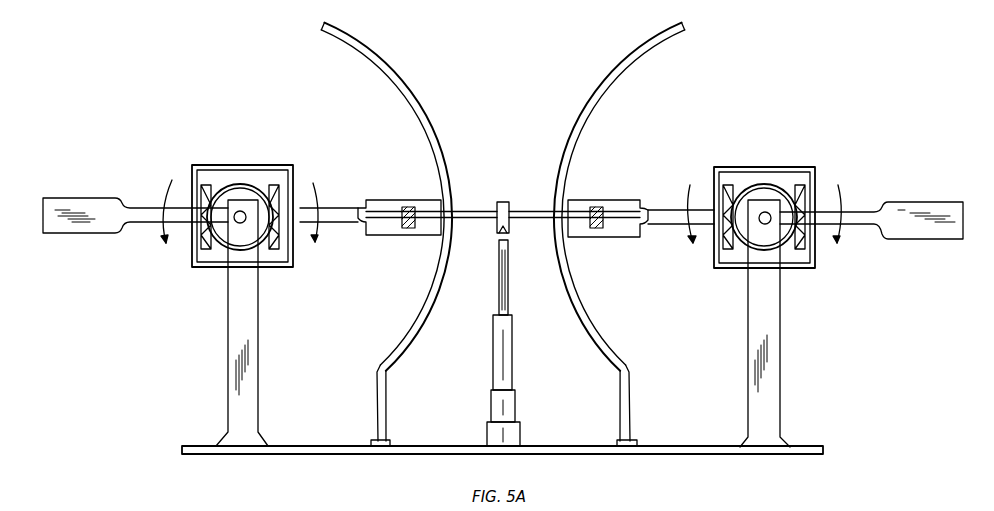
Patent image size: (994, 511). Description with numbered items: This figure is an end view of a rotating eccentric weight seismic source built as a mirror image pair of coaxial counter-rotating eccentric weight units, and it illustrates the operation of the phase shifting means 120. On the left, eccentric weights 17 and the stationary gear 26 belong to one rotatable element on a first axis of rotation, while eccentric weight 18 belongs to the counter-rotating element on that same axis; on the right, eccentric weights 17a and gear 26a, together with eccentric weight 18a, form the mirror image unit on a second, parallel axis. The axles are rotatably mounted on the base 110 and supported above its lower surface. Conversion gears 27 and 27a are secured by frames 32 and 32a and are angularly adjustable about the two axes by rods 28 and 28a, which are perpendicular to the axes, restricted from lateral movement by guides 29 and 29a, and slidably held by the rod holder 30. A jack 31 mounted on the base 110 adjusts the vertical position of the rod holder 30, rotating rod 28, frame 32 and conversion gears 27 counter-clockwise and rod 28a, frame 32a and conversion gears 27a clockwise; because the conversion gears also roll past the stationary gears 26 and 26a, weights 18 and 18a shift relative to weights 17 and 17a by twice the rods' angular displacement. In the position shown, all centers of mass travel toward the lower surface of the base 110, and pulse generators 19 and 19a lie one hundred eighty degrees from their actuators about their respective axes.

The eccentric weights 17 is at (100, 207).
The eccentric weights 17a is at (912, 208).
The eccentric weight 18 is at (432, 168).
The eccentric weight 18a is at (628, 202).
The pulse generator 19 is at (408, 230).
The pulse generator 19a is at (602, 229).
The gear 26 is at (252, 192).
The gear 26a is at (773, 194).
The conversion gears 27 is at (213, 248).
The conversion gears 27a is at (733, 248).
The rod 28 is at (484, 221).
The rod 28a is at (542, 220).
The guide 29 is at (378, 64).
The guide 29a is at (638, 58).
The rod holder 30 is at (505, 201).
The jack 31 is at (505, 437).
The frame 32 is at (241, 165).
The frame 32a is at (718, 167).
The base 110 is at (813, 446).
The phase shifting means 120 is at (573, 50).